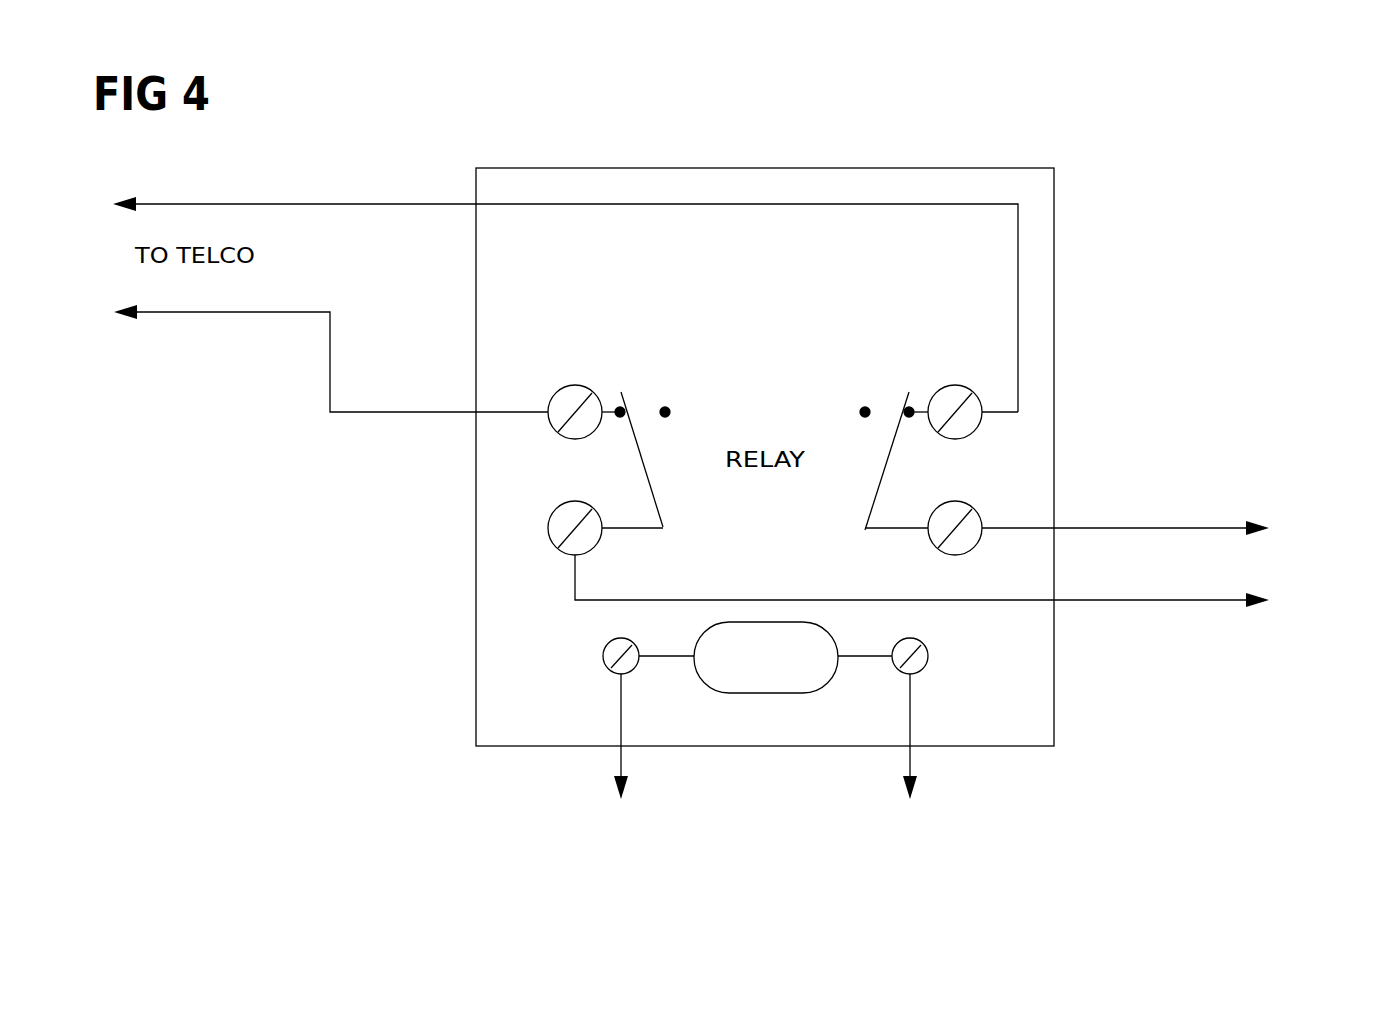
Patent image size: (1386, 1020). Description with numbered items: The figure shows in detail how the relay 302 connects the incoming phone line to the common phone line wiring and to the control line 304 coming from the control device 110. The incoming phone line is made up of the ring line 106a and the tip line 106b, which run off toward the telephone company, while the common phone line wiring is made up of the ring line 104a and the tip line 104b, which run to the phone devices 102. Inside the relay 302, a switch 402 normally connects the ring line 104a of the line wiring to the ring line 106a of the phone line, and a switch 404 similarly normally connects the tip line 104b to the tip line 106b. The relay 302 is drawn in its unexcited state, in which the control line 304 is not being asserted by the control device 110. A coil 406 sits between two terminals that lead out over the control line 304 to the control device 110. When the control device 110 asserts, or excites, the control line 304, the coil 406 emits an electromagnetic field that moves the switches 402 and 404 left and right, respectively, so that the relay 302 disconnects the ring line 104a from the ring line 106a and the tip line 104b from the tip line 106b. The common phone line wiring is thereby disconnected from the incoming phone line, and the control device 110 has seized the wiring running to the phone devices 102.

The relay 302 is at (786, 321).
The ring line 106a is at (343, 204).
The tip line 106b is at (243, 312).
The switch 404 is at (665, 526).
The switch 402 is at (868, 508).
The ring line 104a is at (1162, 530).
The tip line 104b is at (1172, 602).
The coil 406 is at (773, 696).
The control line 304 is at (614, 787).
The phone devices 102 is at (1219, 565).
The control device 110 is at (766, 817).